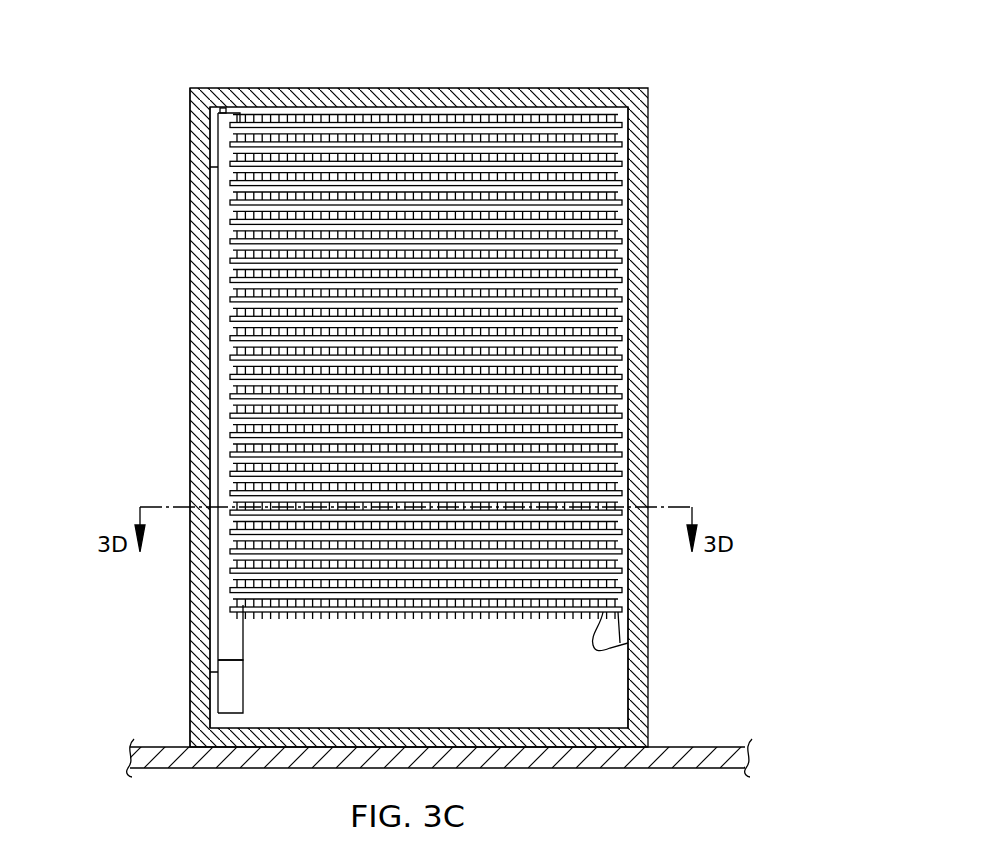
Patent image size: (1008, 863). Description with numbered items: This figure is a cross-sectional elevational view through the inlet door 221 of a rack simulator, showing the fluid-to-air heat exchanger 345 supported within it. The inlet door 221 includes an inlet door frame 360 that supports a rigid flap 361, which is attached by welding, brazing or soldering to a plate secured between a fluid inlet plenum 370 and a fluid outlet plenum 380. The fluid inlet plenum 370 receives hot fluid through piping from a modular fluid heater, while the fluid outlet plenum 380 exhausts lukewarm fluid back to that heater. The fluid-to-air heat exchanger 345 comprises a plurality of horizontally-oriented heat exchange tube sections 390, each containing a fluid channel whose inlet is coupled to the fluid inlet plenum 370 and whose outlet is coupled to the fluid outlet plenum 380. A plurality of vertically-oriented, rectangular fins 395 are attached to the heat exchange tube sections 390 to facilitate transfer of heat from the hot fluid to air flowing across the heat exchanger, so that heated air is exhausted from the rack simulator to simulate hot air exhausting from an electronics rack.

The inlet door 221 is at (585, 84).
The fluid-to-air heat exchanger 345 is at (638, 146).
The inlet door frame 360 is at (190, 333).
The rigid flap 361 is at (217, 235).
The fluid inlet plenum 370 is at (233, 641).
The fluid outlet plenum 380 is at (237, 697).
The heat exchange tube sections 390 is at (612, 280).
The fins 395 is at (593, 648).